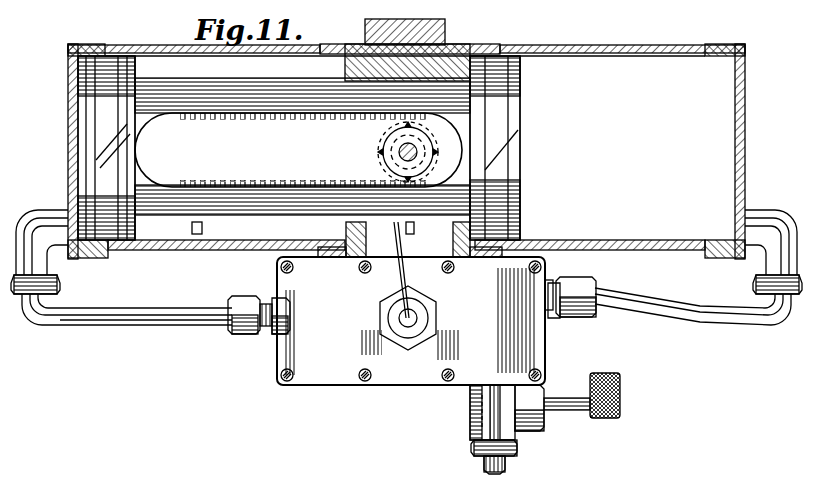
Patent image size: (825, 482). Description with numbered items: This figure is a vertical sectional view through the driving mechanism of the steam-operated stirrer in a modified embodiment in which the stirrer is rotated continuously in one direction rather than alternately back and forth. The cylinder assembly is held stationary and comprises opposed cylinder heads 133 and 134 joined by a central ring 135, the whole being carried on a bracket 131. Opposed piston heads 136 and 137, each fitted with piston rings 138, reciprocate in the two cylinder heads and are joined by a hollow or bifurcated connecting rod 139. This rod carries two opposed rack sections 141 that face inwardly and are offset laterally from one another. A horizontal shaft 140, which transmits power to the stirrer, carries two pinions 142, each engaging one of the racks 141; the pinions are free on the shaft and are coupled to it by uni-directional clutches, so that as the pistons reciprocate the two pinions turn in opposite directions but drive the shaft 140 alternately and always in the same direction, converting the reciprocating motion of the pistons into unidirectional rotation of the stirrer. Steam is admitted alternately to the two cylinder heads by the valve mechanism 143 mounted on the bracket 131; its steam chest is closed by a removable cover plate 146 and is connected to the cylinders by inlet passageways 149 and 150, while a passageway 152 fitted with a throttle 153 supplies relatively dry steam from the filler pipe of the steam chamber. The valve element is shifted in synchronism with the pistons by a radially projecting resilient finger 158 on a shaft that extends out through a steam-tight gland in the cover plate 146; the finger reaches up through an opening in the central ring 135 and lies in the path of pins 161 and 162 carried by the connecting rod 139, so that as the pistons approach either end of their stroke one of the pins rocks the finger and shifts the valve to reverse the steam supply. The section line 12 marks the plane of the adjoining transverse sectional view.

The section line 12- 12 is at (450, 9).
The bracket 131 is at (367, 30).
The cylinder head 133 is at (156, 36).
The cylinder head 134 is at (632, 36).
The central ring 135 is at (458, 52).
The piston head 136 is at (90, 126).
The piston head 137 is at (524, 168).
The piston rings 138 is at (106, 106).
The connecting rod 139 is at (257, 92).
The shaft 140 is at (396, 146).
The rack sections 141 is at (276, 125).
The pinions 142 is at (390, 150).
The valve mechanism 143 is at (329, 391).
The cover plate 146 is at (468, 366).
The inlet passageway 149 is at (134, 325).
The inlet passageway 150 is at (694, 318).
The passageway 152 is at (508, 466).
The throttle 153 is at (622, 402).
The resilient finger 158 is at (402, 254).
The pin 161 is at (203, 229).
The pin 162 is at (415, 230).